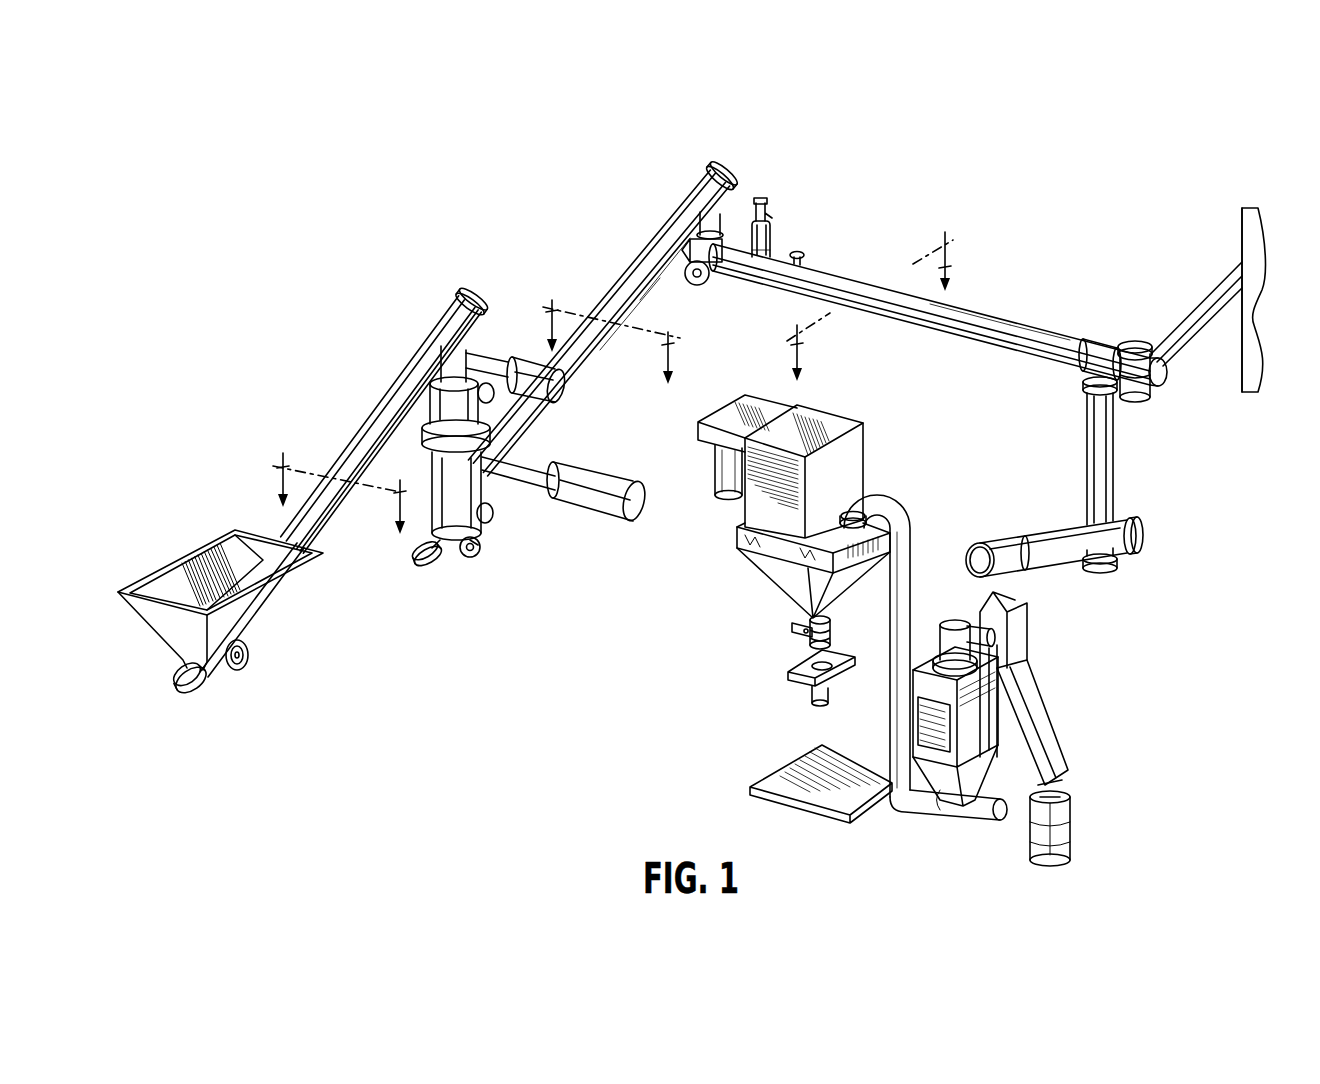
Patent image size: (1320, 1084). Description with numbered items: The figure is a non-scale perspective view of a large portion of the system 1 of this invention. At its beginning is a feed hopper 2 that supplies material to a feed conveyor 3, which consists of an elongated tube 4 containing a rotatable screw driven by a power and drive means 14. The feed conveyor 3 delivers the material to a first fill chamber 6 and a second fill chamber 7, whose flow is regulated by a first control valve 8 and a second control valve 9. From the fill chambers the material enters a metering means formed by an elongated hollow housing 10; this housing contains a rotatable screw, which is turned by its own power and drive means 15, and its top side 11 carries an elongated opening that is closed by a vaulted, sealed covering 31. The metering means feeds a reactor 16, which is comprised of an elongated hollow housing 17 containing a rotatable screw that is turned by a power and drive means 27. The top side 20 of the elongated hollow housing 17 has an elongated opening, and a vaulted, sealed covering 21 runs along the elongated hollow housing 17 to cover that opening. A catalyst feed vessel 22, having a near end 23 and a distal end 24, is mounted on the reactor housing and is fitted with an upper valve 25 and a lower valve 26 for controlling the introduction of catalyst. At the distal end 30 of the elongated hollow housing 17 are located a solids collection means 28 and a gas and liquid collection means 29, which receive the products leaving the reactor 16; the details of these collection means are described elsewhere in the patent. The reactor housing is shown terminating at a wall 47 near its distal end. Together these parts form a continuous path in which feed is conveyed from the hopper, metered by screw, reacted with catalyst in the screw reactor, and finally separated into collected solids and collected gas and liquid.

The feeding apparatus 1 is at (1065, 209).
The feed hopper 2 is at (436, 594).
The feed conveyor 3 is at (436, 491).
The elongated tube 4 is at (327, 510).
The first fill chamber 6 is at (459, 469).
The second fill chamber 7 is at (440, 525).
The first control valve 8 is at (528, 368).
The second control valve 9 is at (587, 493).
The elongated hollow housing 10 is at (604, 317).
The top side 11 is at (620, 288).
The power and drive means 14 is at (250, 658).
The power and drive means 15 is at (478, 560).
The reactor 16 is at (935, 247).
The elongated hollow housing 17 is at (905, 320).
The top side 20 is at (978, 308).
The vaulted, sealed covering 21 is at (1020, 322).
The catalyst feed vessel 22 is at (783, 185).
The near end 23 is at (754, 203).
The distal end 24 is at (721, 285).
The upper valve 25 is at (768, 216).
The lower valve 26 is at (802, 257).
The power and drive means 27 is at (740, 268).
The solids collection means 28 is at (912, 835).
The gas and liquid collection means 29 is at (1140, 340).
The distal end 30 is at (1078, 410).
The vaulted, sealed covering 31 is at (660, 248).
The wall 47 is at (1228, 415).